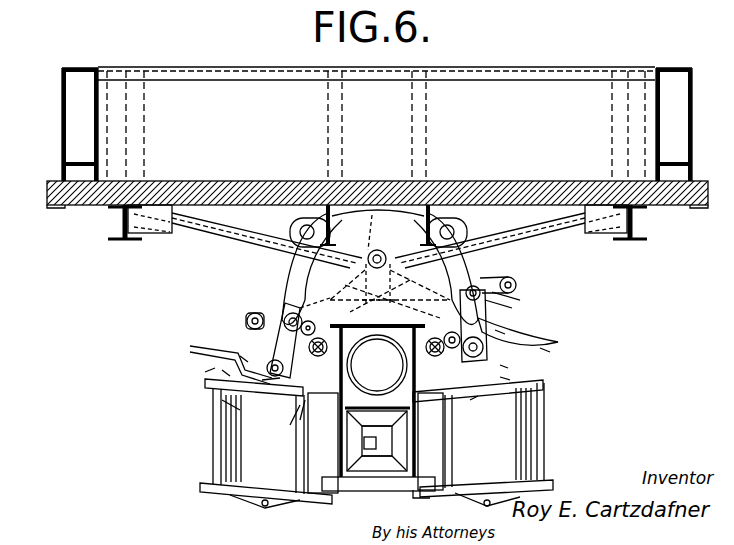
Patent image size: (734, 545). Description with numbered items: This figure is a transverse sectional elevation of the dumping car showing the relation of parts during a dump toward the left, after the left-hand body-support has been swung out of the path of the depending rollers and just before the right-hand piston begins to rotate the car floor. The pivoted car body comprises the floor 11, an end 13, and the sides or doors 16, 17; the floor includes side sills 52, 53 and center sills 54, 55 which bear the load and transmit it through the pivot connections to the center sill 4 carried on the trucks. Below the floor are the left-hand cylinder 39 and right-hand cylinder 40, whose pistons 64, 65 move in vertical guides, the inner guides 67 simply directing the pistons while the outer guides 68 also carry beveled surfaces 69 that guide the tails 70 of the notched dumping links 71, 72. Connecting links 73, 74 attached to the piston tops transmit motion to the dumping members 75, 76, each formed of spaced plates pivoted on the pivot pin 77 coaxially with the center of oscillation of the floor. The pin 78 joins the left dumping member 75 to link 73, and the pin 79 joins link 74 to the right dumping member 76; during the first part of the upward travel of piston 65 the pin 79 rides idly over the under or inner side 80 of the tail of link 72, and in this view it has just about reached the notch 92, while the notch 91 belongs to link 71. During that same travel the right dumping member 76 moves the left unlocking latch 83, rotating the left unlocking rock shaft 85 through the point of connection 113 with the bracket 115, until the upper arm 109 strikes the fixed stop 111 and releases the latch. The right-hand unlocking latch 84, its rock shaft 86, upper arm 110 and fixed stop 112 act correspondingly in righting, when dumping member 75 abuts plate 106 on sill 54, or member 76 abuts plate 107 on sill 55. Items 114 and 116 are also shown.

The center sill 4 is at (378, 408).
The floor 11 is at (216, 183).
The end 13 is at (633, 53).
The side or door 16 is at (70, 119).
The side or door 17 is at (677, 105).
The left-hand cylinder 39 is at (240, 434).
The right-hand cylinder 40 is at (483, 443).
The side sill 52 is at (126, 241).
The side sill 53 is at (640, 243).
The center sill 54 is at (326, 215).
The center sill 55 is at (432, 220).
The piston 64 is at (273, 386).
The right-hand piston 65 is at (545, 348).
The inner guide 67 is at (222, 400).
The outer guide 68 is at (205, 372).
The beveled surface 69 is at (222, 370).
The tail 70 is at (240, 356).
The dumping link 71 is at (252, 259).
The dumping link 72 is at (495, 269).
The connecting link 73 is at (260, 343).
The connecting link 74 is at (492, 303).
The dumping member 75 is at (340, 272).
The dumping member 76 is at (390, 291).
The pivot pin 77 is at (381, 256).
The pin 78 is at (265, 307).
The pin 79 is at (492, 292).
The under or inner side 80 is at (252, 314).
The left unlocking latch 83 is at (480, 278).
The right-hand unlocking latch 84 is at (372, 215).
The left unlocking rock shaft 85 is at (325, 394).
The right-hand unlocking rock shaft 86 is at (450, 360).
The notch 91 is at (301, 303).
The notch 92 is at (490, 240).
The plate 106 is at (298, 229).
The plate 107 is at (455, 218).
The upper arm 109 is at (272, 294).
The upper arm 110 is at (461, 324).
The fixed stop 111 is at (330, 313).
The fixed stop 112 is at (448, 317).
The point of connection 113 is at (338, 298).
The cam tail 114 is at (492, 312).
The bracket 115 is at (300, 420).
The right panel 116 is at (434, 445).